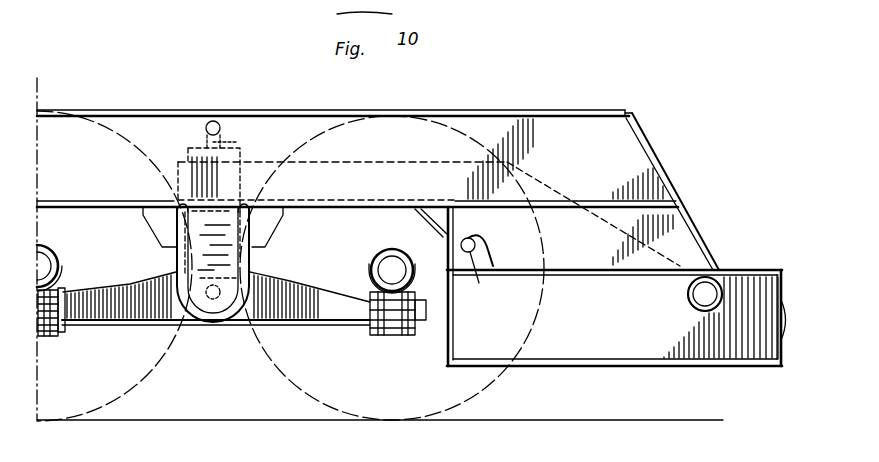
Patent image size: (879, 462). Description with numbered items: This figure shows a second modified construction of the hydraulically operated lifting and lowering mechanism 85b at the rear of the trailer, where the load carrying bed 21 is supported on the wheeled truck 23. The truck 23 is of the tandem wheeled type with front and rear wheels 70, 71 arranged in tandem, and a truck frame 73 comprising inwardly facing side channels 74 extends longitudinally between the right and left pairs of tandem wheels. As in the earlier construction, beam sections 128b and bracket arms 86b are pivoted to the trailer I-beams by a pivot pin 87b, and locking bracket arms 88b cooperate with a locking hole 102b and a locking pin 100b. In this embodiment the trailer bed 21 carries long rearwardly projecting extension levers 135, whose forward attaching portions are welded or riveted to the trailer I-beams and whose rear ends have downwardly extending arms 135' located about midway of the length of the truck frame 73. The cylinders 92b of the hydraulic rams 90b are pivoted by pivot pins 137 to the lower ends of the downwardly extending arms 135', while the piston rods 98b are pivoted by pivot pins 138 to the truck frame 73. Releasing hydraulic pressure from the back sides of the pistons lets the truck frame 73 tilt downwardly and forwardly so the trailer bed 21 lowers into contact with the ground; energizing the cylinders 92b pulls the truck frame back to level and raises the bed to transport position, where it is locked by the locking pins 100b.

The wheeled truck 23 is at (137, 97).
The truck frame 73 is at (343, 109).
The side channels 74 is at (570, 130).
The hydraulically operated lifting and lowering mechanism 85b is at (641, 156).
The beam sections 128b is at (678, 235).
The load carrying bed 21 is at (777, 271).
The bracket arms 86b is at (690, 282).
The pivot pin 87b is at (707, 298).
The extension levers 135 is at (429, 199).
The downwardly extending arms 135' is at (140, 181).
The cylinders 92b is at (240, 182).
The hydraulic lifting rams 90b is at (190, 147).
The piston rods 98b is at (232, 147).
The pivot pins 138 is at (215, 121).
The pivot pins 137 is at (200, 292).
The rear wheels 71 is at (123, 393).
The front wheels 70 is at (305, 393).
The locking pin 100b is at (477, 239).
The locking bracket arms 88b is at (484, 252).
The locking hole 102b is at (491, 281).